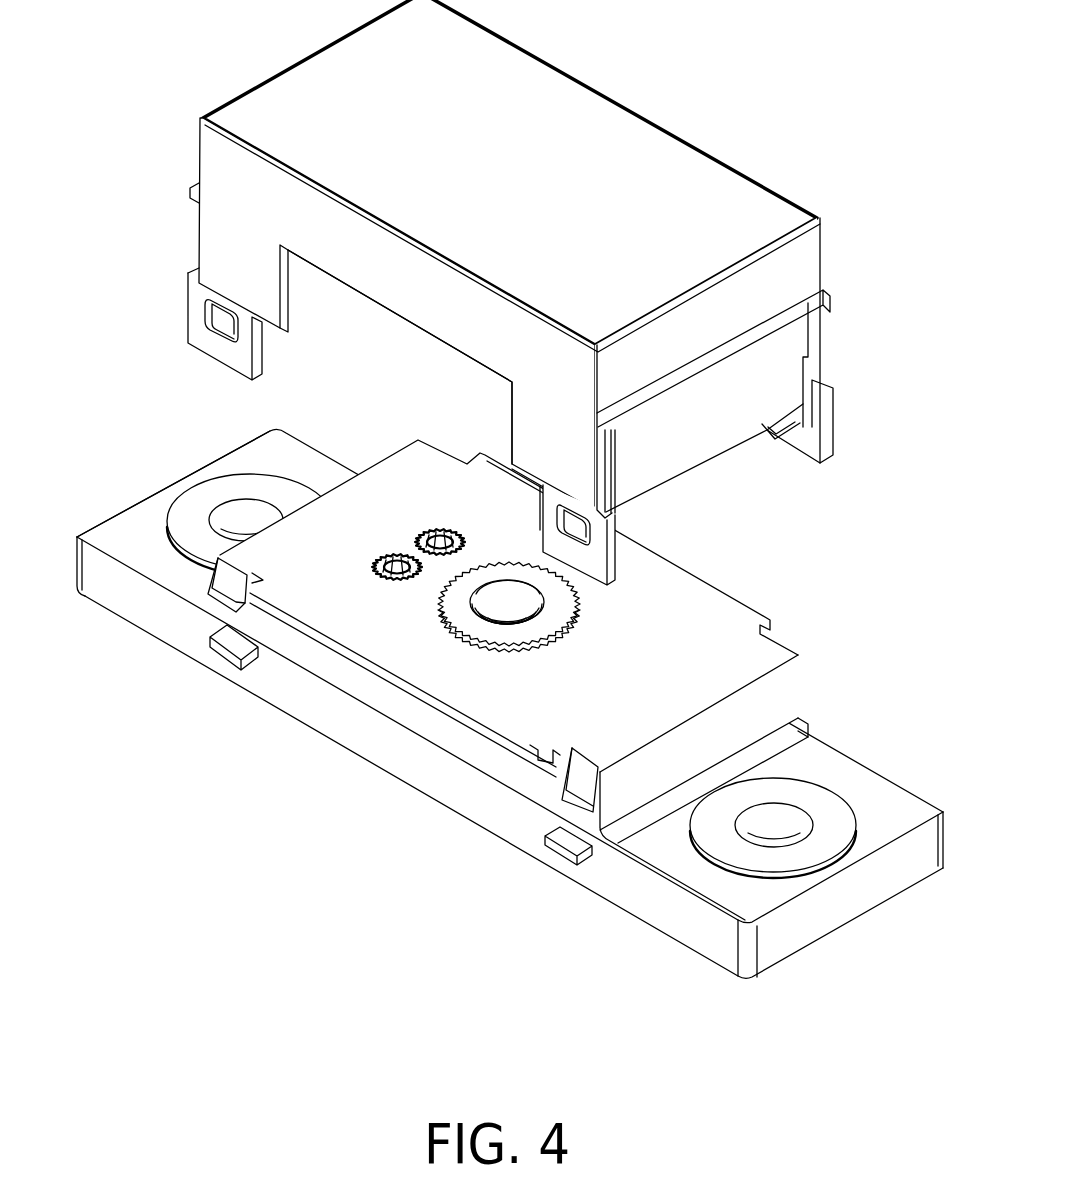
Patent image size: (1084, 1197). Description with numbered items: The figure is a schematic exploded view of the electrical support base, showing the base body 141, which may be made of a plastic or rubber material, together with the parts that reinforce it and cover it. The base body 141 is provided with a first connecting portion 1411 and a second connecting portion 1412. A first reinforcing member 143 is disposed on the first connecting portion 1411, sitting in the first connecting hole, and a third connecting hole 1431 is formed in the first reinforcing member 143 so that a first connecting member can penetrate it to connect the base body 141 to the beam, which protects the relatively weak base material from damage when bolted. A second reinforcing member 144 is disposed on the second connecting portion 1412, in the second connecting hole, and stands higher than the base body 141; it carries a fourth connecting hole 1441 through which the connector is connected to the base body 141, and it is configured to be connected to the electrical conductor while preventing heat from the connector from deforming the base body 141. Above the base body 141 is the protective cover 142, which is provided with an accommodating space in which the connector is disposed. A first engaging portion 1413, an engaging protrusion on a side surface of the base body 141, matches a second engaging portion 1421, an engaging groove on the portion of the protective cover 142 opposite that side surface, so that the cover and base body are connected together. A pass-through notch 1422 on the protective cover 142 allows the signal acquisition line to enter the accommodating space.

The base body 141 is at (330, 710).
The first connecting portion 1411 is at (160, 543).
The second connecting portion 1412 is at (482, 650).
The first engaging portion 1413 is at (223, 590).
The protective cover 142 is at (597, 125).
The second engaging portion 1421 is at (205, 300).
The pass-through notch 1422 is at (358, 325).
The first reinforcing member 143 is at (212, 495).
The third connecting hole 1431 is at (214, 522).
The second reinforcing member 144 is at (560, 612).
The fourth connecting hole 1441 is at (530, 601).